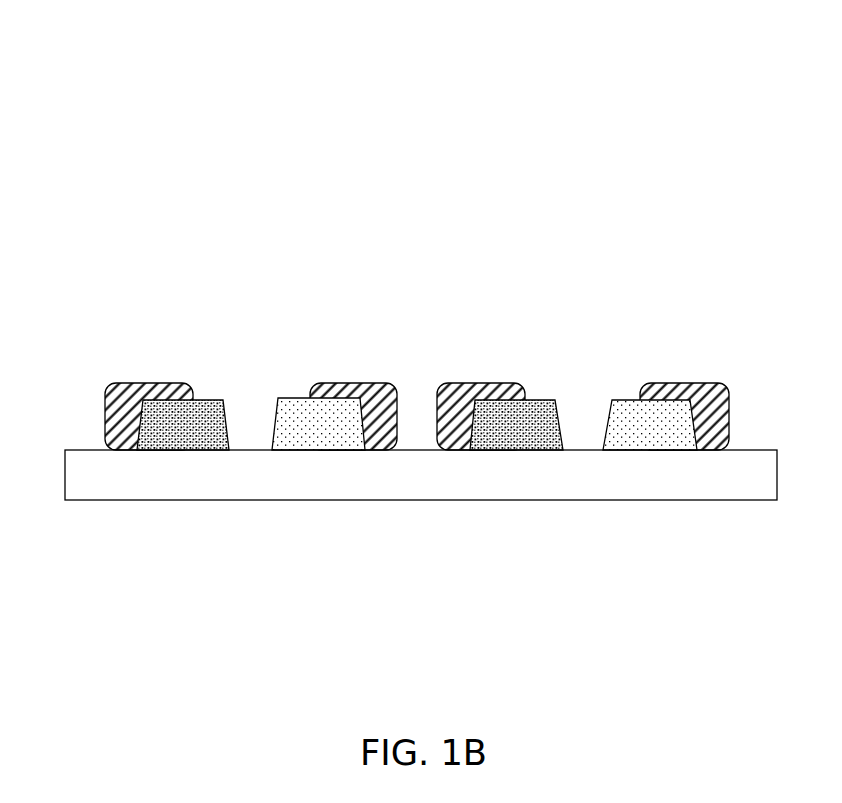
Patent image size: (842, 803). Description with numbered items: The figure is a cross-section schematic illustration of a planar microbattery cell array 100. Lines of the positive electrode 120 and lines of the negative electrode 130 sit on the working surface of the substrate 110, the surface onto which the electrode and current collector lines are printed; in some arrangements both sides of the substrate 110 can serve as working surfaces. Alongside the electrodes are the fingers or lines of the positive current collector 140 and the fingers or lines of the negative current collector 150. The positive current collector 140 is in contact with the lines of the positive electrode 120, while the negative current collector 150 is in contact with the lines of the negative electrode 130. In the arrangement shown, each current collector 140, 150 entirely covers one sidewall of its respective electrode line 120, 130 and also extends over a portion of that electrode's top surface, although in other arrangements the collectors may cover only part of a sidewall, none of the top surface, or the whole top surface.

The array 100 is at (173, 167).
The substrate 110 is at (135, 490).
The positive electrode 120 is at (517, 423).
The negative electrode 130 is at (323, 425).
The positive current collector 140 is at (445, 400).
The negative current collector 150 is at (387, 412).